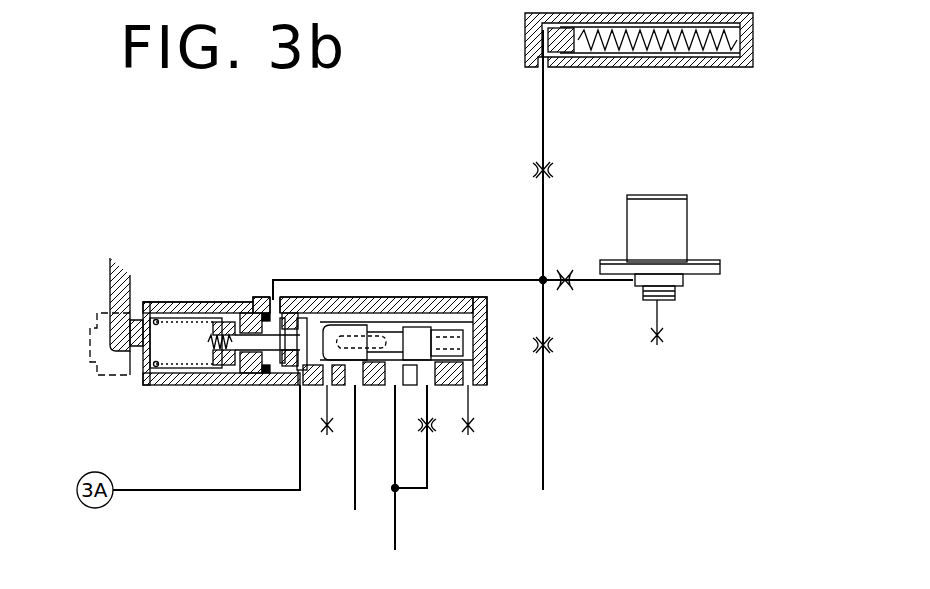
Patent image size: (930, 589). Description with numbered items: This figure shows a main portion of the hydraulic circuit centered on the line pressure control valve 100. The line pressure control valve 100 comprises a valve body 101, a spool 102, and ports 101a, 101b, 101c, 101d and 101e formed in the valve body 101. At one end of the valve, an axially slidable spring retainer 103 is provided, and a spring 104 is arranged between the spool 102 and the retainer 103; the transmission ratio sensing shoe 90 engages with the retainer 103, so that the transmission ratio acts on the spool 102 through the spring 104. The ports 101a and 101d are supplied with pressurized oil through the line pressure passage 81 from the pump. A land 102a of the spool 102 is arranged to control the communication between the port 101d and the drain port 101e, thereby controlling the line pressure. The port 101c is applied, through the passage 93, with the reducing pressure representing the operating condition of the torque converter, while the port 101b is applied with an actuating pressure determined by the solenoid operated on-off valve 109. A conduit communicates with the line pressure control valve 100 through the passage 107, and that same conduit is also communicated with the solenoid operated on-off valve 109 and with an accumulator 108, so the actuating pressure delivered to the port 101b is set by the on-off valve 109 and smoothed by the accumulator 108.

The line pressure passage 81 is at (396, 533).
The transmission ratio sensing shoe 90 is at (126, 285).
The passage 93 is at (186, 470).
The line pressure control valve 100 is at (252, 258).
The valve body 101 is at (470, 312).
The port 101a is at (482, 426).
The port 101b is at (270, 296).
The port 101c is at (299, 386).
The port 101d is at (392, 385).
The drain port 101e is at (352, 385).
The spool 102 is at (388, 345).
The land 102a is at (341, 330).
The spring retainer 103 is at (130, 367).
The spring 104 is at (155, 370).
The passage 107 is at (478, 252).
The accumulator 108 is at (612, 60).
The solenoid operated on-off valve 109 is at (683, 183).